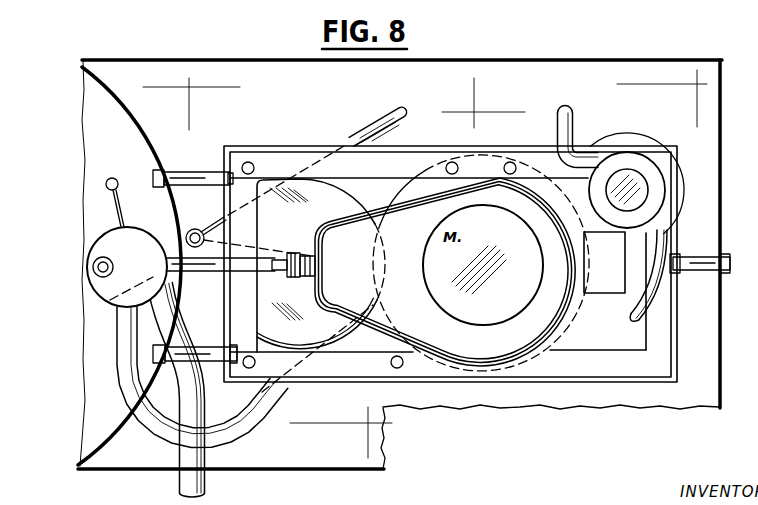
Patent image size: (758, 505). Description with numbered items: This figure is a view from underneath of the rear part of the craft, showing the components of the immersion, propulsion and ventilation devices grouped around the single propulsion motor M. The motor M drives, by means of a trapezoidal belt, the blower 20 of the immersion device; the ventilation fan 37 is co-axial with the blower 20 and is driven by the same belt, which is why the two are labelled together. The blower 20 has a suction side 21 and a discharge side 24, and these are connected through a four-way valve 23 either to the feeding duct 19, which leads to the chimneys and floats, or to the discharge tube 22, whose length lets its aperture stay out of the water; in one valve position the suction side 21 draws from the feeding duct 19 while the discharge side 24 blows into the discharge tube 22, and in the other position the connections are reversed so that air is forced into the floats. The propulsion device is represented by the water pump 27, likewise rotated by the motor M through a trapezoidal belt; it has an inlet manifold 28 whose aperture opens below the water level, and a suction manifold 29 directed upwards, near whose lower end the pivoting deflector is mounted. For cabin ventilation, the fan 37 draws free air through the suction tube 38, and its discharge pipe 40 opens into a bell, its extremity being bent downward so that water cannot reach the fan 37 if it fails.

The feeding duct 19 is at (206, 491).
The blower 20 is at (321, 265).
The fan 37 is at (315, 266).
The suction side 21 is at (197, 278).
The discharge tube 22 is at (93, 266).
The four-way valve 23 is at (127, 242).
The discharge side 24 is at (256, 428).
The water pump 27 is at (658, 177).
The inlet manifold 28 is at (574, 121).
The suction manifold 29 is at (632, 318).
The suction tube 38 is at (197, 229).
The discharge pipe 40 is at (369, 122).